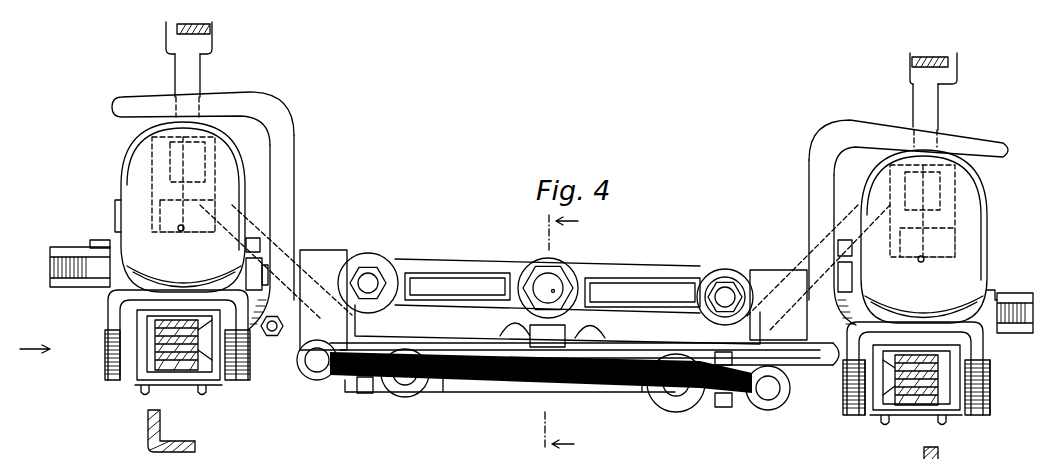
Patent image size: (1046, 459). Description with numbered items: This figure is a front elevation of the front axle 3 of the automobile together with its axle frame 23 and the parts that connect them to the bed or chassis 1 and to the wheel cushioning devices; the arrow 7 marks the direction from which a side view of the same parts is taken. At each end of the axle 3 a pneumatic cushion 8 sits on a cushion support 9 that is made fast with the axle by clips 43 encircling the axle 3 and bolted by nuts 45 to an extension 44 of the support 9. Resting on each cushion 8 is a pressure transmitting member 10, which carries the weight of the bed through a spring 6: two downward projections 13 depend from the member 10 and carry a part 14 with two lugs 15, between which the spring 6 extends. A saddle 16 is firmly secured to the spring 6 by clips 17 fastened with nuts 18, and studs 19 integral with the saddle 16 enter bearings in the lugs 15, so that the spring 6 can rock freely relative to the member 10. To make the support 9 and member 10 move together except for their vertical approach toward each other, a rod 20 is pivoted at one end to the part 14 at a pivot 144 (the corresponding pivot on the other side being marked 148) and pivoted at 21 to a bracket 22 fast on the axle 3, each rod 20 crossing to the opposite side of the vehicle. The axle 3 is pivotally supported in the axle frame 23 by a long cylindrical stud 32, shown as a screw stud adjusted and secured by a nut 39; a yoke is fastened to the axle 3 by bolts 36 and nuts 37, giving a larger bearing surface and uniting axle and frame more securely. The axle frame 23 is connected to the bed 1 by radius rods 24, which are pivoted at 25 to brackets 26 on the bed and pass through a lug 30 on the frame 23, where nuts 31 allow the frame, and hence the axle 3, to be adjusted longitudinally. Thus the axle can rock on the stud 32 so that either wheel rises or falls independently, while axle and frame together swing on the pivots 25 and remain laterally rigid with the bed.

The bed or chassis 1 is at (212, 30).
The axle 3 is at (440, 262).
The spring 6 is at (110, 402).
The arrow 7 is at (28, 361).
The pneumatic cushion 8 is at (135, 160).
The support 9 is at (115, 212).
The pressure transmitting member 10 is at (222, 113).
The downward projections 13 is at (295, 168).
The part 14 is at (125, 300).
The lugs 15 is at (105, 352).
The saddle 16 is at (137, 335).
The clip 17 is at (205, 385).
The nuts 18 is at (150, 392).
The studs 19 is at (870, 400).
The rod 20 is at (660, 395).
The pivot 21 is at (315, 368).
The bracket 22 is at (352, 268).
The axle frame 23 is at (540, 390).
The radius rods 24 is at (378, 316).
The pivots 25 is at (152, 185).
The brackets 26 is at (175, 65).
The lug 30 is at (385, 395).
The nuts 31 is at (405, 386).
The cylindrical stud 32 is at (543, 286).
The bolts 36 is at (718, 297).
The nuts 37 is at (722, 288).
The nut 39 is at (556, 280).
The clips 43 is at (108, 268).
The extension 44 is at (98, 242).
The nuts 45 is at (262, 228).
The pivot 144 is at (302, 253).
The pivot 148 is at (274, 340).